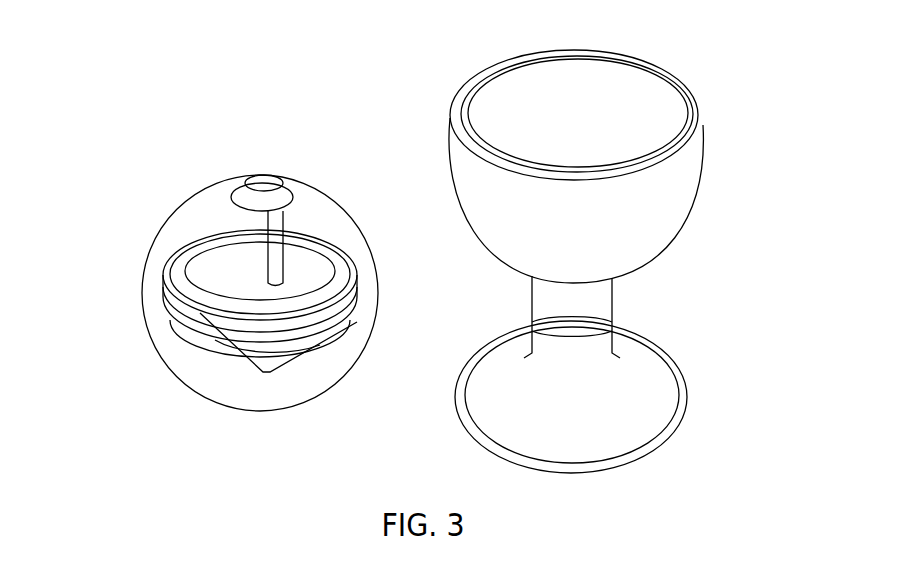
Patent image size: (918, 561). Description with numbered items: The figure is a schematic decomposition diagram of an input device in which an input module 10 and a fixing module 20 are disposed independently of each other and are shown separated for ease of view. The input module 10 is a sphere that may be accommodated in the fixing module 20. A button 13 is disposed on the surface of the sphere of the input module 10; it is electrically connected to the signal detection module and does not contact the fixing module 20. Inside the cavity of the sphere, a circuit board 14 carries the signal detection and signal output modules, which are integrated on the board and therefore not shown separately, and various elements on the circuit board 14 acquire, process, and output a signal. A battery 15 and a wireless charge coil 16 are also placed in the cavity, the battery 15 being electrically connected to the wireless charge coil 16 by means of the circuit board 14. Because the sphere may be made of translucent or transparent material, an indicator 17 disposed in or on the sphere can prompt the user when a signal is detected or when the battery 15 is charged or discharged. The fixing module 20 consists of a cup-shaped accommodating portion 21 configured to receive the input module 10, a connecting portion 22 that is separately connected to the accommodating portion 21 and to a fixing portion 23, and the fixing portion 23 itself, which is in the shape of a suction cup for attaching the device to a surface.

The input module 10 is at (77, 112).
The button 13 is at (253, 177).
The circuit board 14 is at (177, 312).
The battery 15 is at (215, 355).
The wireless charge coil 16 is at (180, 260).
The indicator 17 is at (198, 333).
The fixing module 20 is at (790, 115).
The accommodating portion 21 is at (682, 190).
The connecting portion 22 is at (612, 310).
The fixing portion 23 is at (648, 407).